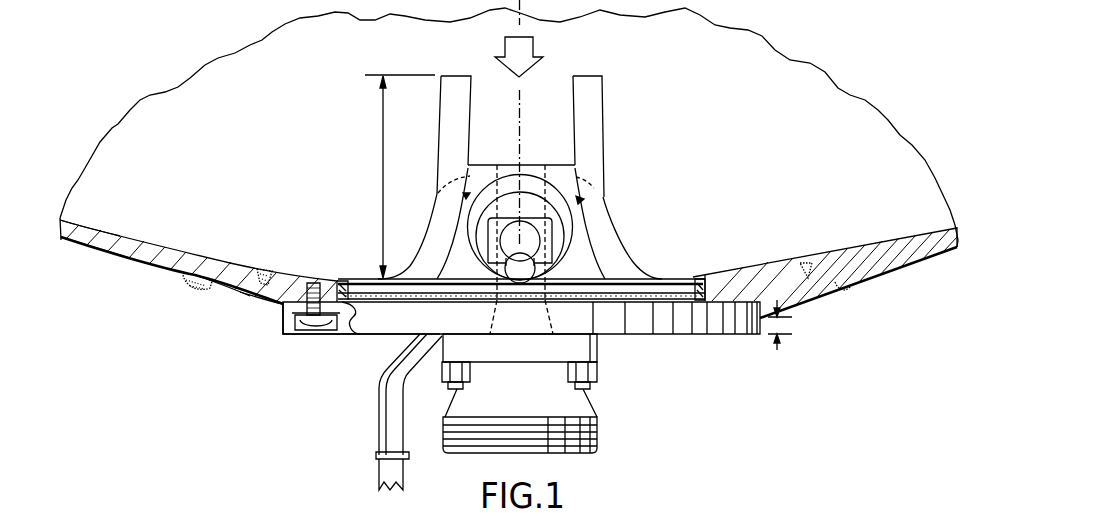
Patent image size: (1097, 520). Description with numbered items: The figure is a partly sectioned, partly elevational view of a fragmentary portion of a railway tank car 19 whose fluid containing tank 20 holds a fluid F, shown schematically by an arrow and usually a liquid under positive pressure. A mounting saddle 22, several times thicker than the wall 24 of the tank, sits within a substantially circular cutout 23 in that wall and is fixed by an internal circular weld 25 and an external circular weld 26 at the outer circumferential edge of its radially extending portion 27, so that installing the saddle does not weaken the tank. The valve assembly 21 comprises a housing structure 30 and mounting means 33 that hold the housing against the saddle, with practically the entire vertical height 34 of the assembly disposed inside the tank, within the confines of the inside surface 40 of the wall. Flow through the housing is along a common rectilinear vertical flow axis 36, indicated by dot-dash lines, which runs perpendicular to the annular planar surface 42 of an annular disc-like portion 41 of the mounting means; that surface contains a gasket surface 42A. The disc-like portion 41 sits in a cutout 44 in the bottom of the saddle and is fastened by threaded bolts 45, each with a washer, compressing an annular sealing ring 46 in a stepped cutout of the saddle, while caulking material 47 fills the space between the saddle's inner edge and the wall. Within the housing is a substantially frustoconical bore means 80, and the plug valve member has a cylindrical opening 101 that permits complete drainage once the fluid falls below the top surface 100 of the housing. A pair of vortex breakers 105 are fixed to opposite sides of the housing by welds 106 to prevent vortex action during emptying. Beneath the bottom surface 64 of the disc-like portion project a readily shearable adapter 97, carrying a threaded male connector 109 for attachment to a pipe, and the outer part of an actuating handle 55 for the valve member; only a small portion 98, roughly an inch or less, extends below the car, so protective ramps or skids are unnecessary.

The railway tank car 19 is at (878, 58).
The fluid containing tank 20 is at (896, 268).
The valve assembly 21 is at (645, 348).
The mounting saddle 22 is at (733, 283).
The circular cutout 23 is at (265, 268).
The wall 24 is at (117, 257).
The internal circular weld 25 is at (266, 283).
The external circular weld 26 is at (191, 289).
The radially extending portion 27 is at (251, 293).
The housing structure 30 is at (617, 212).
The mounting means 33 is at (310, 340).
The vertical height 34 is at (400, 176).
The flow axis 36 is at (524, 112).
The inside surface 40 is at (110, 231).
The annular disc-like portion 41 is at (382, 332).
The annular planar surface 42 is at (332, 281).
The gasket surface 42A is at (352, 318).
The cutout 44 is at (300, 323).
The threaded bolts 45 is at (306, 332).
The annular gasket or sealing ring 46 is at (699, 293).
The caulking material 47 is at (699, 283).
The actuating handle 55 is at (380, 424).
The bottom surface 64 is at (682, 336).
The frustoconical bore means 80 is at (475, 236).
The adapter 97 is at (585, 402).
The portion 98 is at (784, 324).
The top surface 100 is at (556, 165).
The cylindrical opening 101 is at (510, 273).
The vortex breakers 105 is at (456, 88).
The welds 106 is at (470, 194).
The threaded male connector 109 is at (598, 435).
The fluid F is at (538, 47).